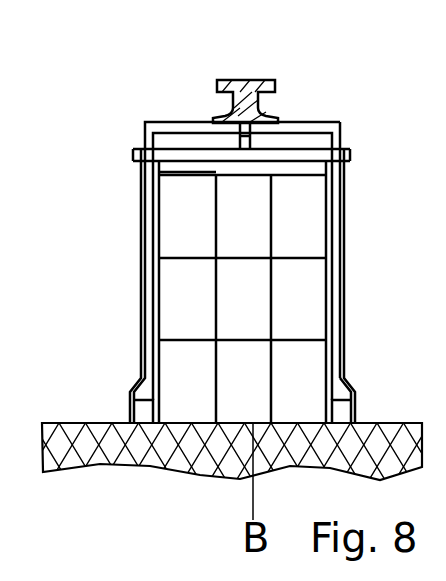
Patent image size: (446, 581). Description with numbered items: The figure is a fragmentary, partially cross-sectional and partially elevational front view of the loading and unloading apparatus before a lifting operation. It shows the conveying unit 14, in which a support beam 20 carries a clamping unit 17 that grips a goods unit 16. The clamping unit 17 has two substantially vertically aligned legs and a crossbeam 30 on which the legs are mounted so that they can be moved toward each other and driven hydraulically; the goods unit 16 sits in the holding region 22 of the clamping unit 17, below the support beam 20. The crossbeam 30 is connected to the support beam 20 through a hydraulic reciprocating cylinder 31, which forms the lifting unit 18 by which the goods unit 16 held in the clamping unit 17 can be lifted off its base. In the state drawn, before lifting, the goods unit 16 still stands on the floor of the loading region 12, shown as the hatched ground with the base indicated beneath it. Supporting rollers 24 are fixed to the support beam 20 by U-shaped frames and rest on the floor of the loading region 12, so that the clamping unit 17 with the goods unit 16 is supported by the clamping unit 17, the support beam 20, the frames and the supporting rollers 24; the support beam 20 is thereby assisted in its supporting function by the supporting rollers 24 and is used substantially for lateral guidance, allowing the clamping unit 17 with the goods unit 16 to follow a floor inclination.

The loading region 12 is at (375, 408).
The conveying unit 14 is at (356, 127).
The goods unit 16 is at (298, 232).
The clamping unit 17 is at (304, 115).
The lifting unit 18 is at (226, 129).
The support beam 20 is at (248, 88).
The holding region 22 is at (157, 262).
The supporting roller 24 is at (138, 410).
The crossbeam 30 is at (153, 155).
The hydraulic reciprocating cylinder 31 is at (238, 140).